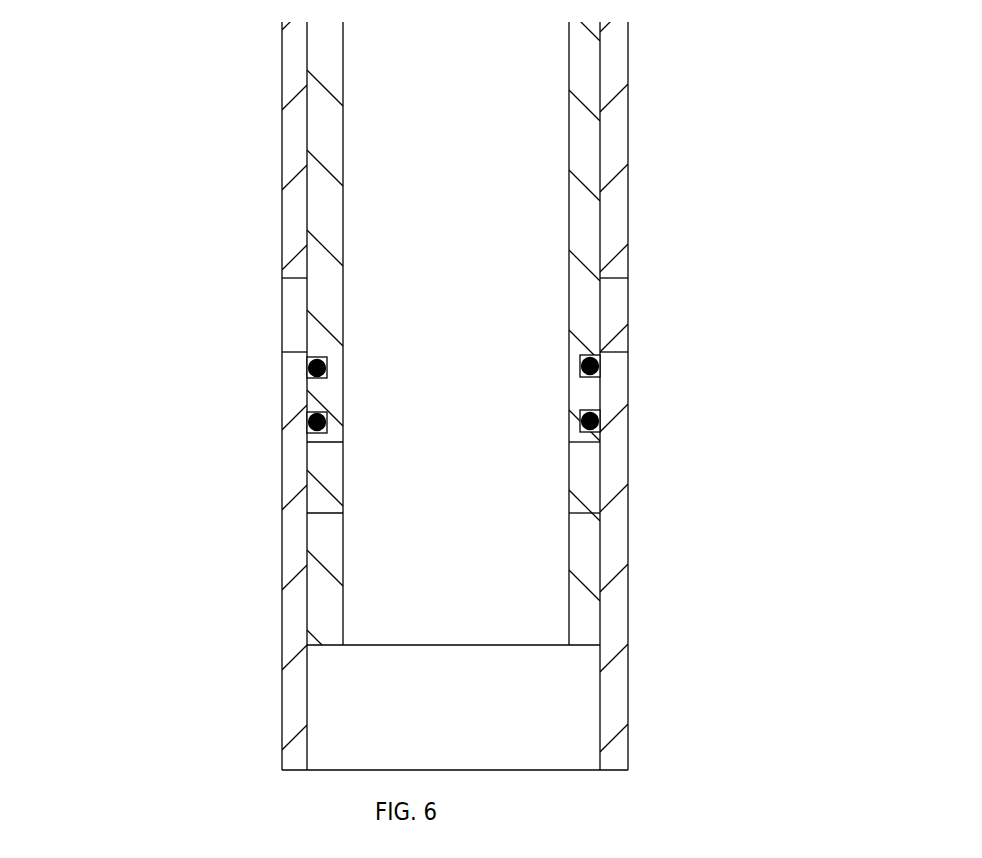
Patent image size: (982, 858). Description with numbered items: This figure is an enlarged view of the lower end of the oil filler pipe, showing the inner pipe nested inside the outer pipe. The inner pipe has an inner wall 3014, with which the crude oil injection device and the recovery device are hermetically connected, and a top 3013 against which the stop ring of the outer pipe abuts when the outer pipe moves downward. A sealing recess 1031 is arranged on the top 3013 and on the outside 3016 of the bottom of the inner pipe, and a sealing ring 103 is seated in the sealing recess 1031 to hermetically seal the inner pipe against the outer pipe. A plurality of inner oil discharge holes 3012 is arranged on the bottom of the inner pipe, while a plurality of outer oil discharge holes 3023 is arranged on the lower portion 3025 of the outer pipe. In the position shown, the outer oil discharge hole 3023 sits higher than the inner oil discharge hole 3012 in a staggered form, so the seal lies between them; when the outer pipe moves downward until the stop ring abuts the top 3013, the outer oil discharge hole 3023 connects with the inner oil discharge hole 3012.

The top 3013 is at (330, 212).
The outer oil discharge hole 3023 is at (613, 317).
The outside 3016 is at (310, 350).
The sealing ring 103 is at (592, 368).
The sealing recess 1031 is at (597, 432).
The inner oil discharge hole 3012 is at (588, 477).
The inner wall 3014 is at (343, 578).
The lower portion 3025 is at (288, 598).